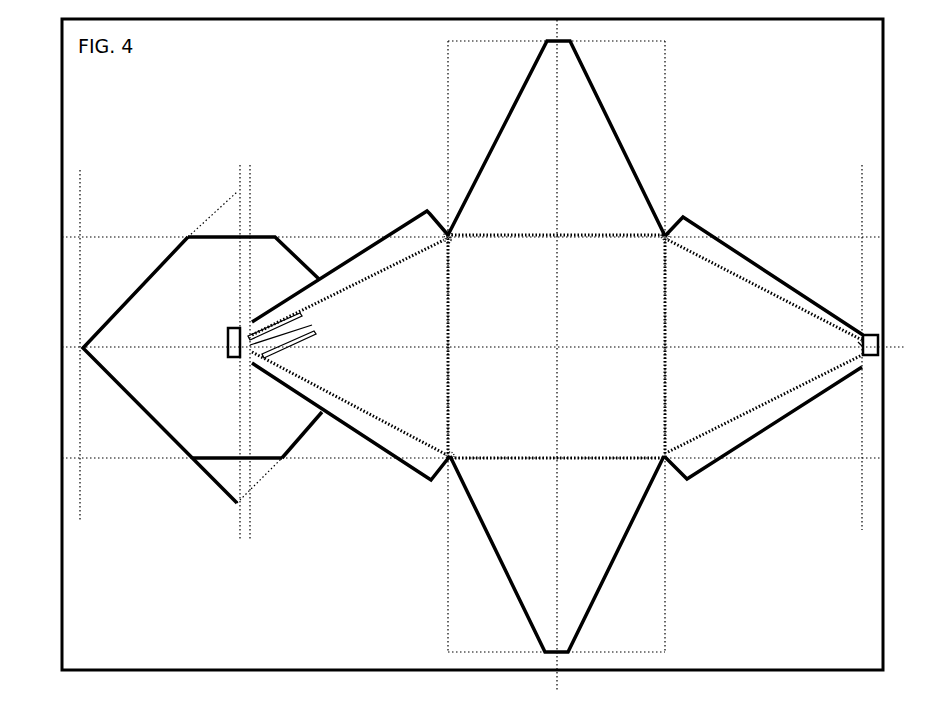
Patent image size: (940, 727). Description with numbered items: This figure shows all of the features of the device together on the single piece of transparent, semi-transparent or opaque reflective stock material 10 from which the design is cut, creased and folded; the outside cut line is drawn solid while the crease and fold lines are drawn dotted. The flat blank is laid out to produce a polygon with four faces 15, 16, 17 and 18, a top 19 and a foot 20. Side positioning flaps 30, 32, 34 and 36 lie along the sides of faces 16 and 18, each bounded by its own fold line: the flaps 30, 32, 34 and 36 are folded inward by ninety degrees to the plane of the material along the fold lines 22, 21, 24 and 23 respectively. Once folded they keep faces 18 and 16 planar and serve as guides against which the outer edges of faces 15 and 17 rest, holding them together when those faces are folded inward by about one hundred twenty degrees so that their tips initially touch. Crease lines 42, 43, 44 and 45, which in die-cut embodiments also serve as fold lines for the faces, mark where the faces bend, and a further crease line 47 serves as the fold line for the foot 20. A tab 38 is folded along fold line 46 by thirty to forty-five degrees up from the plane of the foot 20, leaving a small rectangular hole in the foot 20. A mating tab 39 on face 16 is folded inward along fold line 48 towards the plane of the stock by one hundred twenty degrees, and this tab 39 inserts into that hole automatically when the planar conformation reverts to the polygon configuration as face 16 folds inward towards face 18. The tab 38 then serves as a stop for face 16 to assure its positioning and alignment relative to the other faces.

The stock material 10 is at (752, 22).
The face 15 is at (565, 148).
The face 16 is at (708, 350).
The face 17 is at (527, 530).
The face 18 is at (403, 347).
The top 19 is at (575, 378).
The foot 20 is at (180, 348).
The fold line 21 is at (792, 386).
The fold line 22 is at (735, 280).
The fold line 23 is at (390, 277).
The fold line 24 is at (333, 390).
The side positioning flap 30 is at (775, 280).
The side positioning flap 32 is at (778, 410).
The side positioning flap 34 is at (387, 440).
The side positioning flap 36 is at (367, 258).
The tab 38 is at (228, 338).
The tab 39 is at (883, 332).
The fold line for face 42 is at (510, 250).
The fold line for face 43 is at (462, 298).
The fold line for face 44 is at (482, 450).
The fold line for face 45 is at (655, 268).
The fold line for tab 46 is at (305, 326).
The fold line for foot 47 is at (318, 340).
The fold line for tab 48 is at (848, 350).